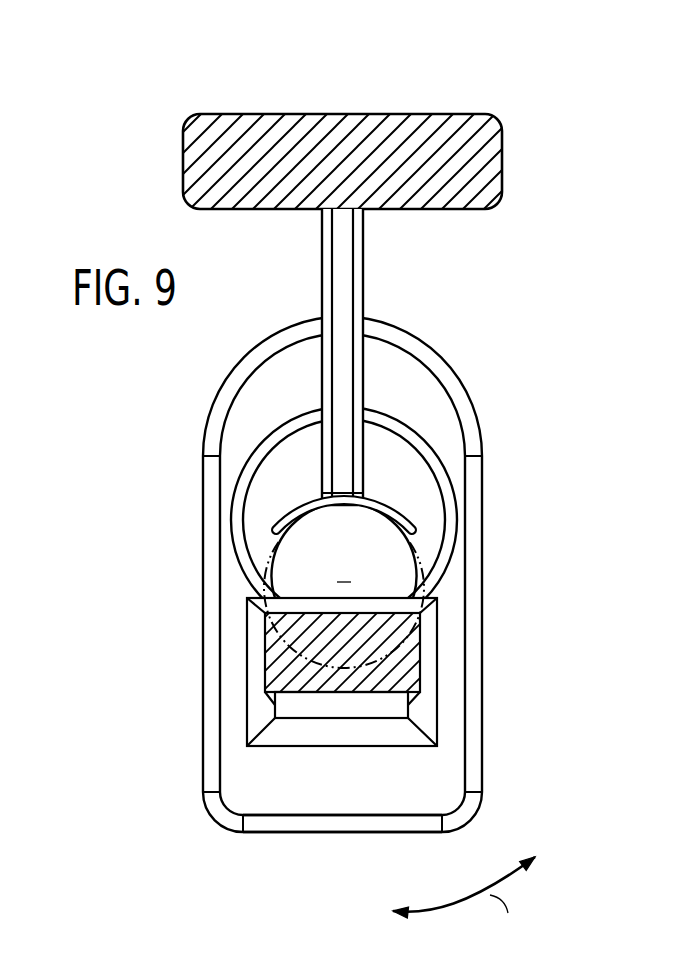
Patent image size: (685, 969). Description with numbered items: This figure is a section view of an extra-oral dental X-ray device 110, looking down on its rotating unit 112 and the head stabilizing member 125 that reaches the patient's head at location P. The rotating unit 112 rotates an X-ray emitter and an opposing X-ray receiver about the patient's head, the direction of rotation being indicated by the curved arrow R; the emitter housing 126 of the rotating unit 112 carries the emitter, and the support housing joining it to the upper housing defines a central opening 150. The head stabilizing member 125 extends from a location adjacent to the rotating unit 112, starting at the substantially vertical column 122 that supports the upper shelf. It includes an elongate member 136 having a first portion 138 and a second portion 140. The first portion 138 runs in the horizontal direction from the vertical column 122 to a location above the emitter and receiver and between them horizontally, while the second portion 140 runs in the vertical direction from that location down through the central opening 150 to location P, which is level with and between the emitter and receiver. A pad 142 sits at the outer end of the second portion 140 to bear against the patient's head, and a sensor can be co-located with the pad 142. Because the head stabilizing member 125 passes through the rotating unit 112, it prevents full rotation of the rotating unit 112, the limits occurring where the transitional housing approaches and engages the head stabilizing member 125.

The X-ray device 110 is at (527, 95).
The rotating unit 112 is at (147, 440).
The substantially vertical column 122 is at (265, 112).
The head stabilizing member 125 is at (392, 267).
The emitter housing 126 is at (227, 815).
The elongate member 136 is at (335, 260).
The first portion 138 is at (343, 300).
The second portion 140 is at (352, 497).
The pad 142 is at (281, 527).
The central opening 150 is at (385, 460).